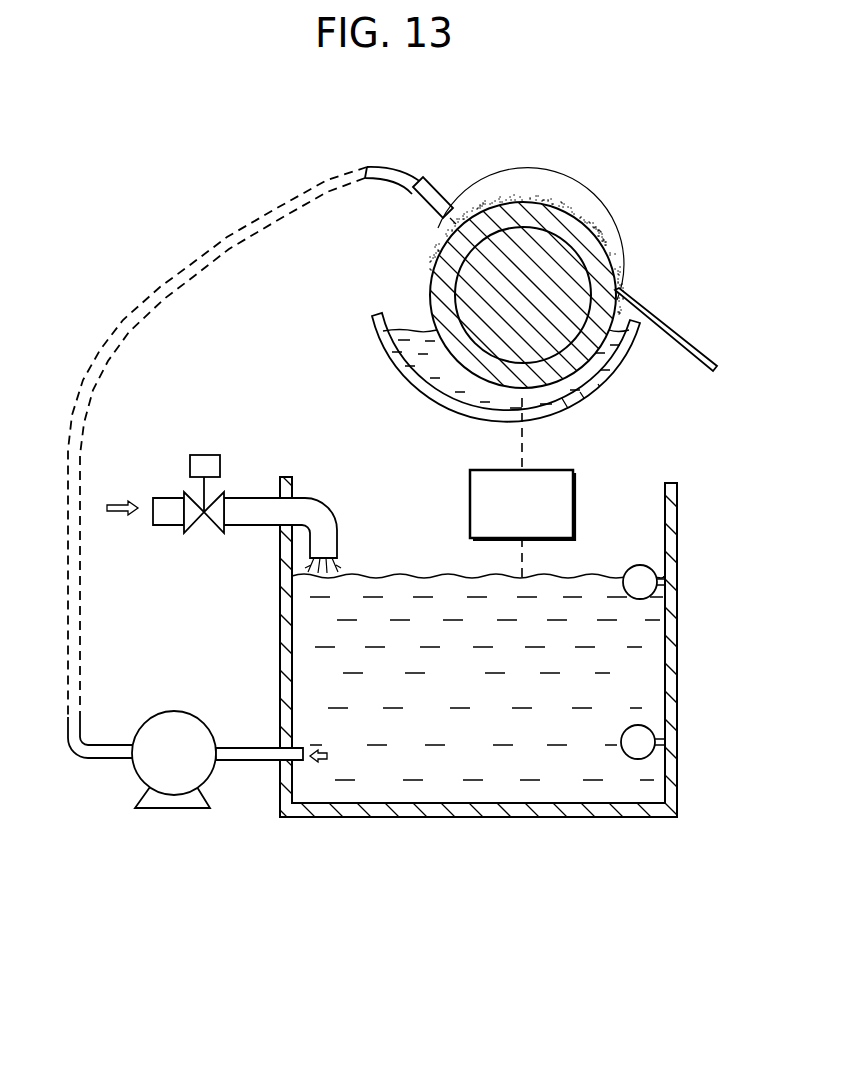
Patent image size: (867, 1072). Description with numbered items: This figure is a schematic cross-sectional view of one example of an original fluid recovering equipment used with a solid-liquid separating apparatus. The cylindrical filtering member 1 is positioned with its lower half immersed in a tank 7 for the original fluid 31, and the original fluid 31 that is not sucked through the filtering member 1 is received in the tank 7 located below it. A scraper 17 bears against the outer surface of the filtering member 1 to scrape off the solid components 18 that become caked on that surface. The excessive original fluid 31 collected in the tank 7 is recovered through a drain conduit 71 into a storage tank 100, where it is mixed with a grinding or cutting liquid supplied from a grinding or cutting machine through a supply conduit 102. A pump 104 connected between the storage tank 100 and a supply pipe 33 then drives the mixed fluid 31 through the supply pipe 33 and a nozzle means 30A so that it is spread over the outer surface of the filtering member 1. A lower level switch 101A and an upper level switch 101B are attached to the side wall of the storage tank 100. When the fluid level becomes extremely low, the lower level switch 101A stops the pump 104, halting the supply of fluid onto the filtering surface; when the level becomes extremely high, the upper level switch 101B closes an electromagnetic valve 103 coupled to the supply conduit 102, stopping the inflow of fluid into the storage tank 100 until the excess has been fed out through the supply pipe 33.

The cylindrical filtering member 1 is at (542, 202).
The tank 7 is at (620, 370).
The scraper 17 is at (697, 363).
The solid components 18 is at (618, 267).
The nozzle means 30A is at (438, 190).
The original fluid 31 is at (452, 222).
The supply pipe 33 is at (368, 165).
The drain conduit 71 is at (497, 472).
The storage tank 100 is at (488, 817).
The lower level switch 101A is at (654, 728).
The upper level switch 101B is at (654, 568).
The supply conduit 102 is at (253, 498).
The electromagnetic valve 103 is at (190, 455).
The pump 104 is at (168, 810).